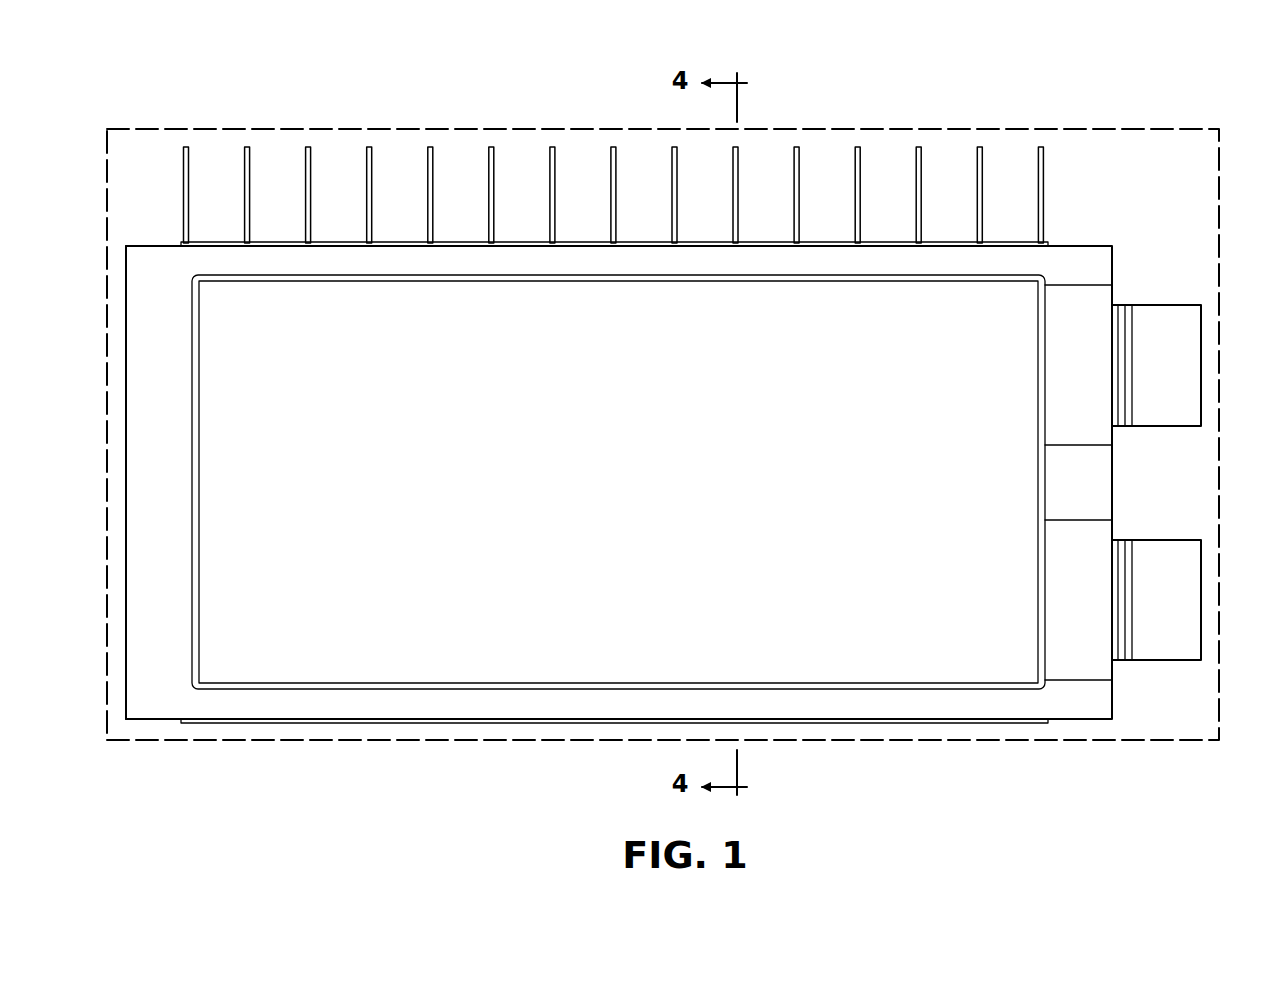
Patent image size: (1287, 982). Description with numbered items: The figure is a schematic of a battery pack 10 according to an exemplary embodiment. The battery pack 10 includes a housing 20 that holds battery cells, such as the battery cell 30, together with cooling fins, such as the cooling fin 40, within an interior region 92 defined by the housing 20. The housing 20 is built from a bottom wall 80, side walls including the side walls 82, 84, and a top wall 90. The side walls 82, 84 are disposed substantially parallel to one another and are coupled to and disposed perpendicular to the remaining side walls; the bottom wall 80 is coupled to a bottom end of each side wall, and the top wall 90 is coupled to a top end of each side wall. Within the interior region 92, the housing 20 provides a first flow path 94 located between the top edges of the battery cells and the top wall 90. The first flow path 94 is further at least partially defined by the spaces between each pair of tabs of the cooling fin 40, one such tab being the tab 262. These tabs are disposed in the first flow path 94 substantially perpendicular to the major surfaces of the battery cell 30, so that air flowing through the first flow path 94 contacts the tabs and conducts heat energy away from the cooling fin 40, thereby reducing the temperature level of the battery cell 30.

The battery pack 10 is at (1004, 118).
The housing 20 is at (401, 129).
The battery cell 30 is at (429, 653).
The cooling fin 40 is at (187, 147).
The bottom wall 80 is at (294, 741).
The side wall 82 is at (1219, 648).
The side wall 84 is at (107, 616).
The top wall 90 is at (262, 129).
The interior region 92 is at (1177, 502).
The first flow path 94 is at (463, 165).
The tab 262 is at (740, 158).